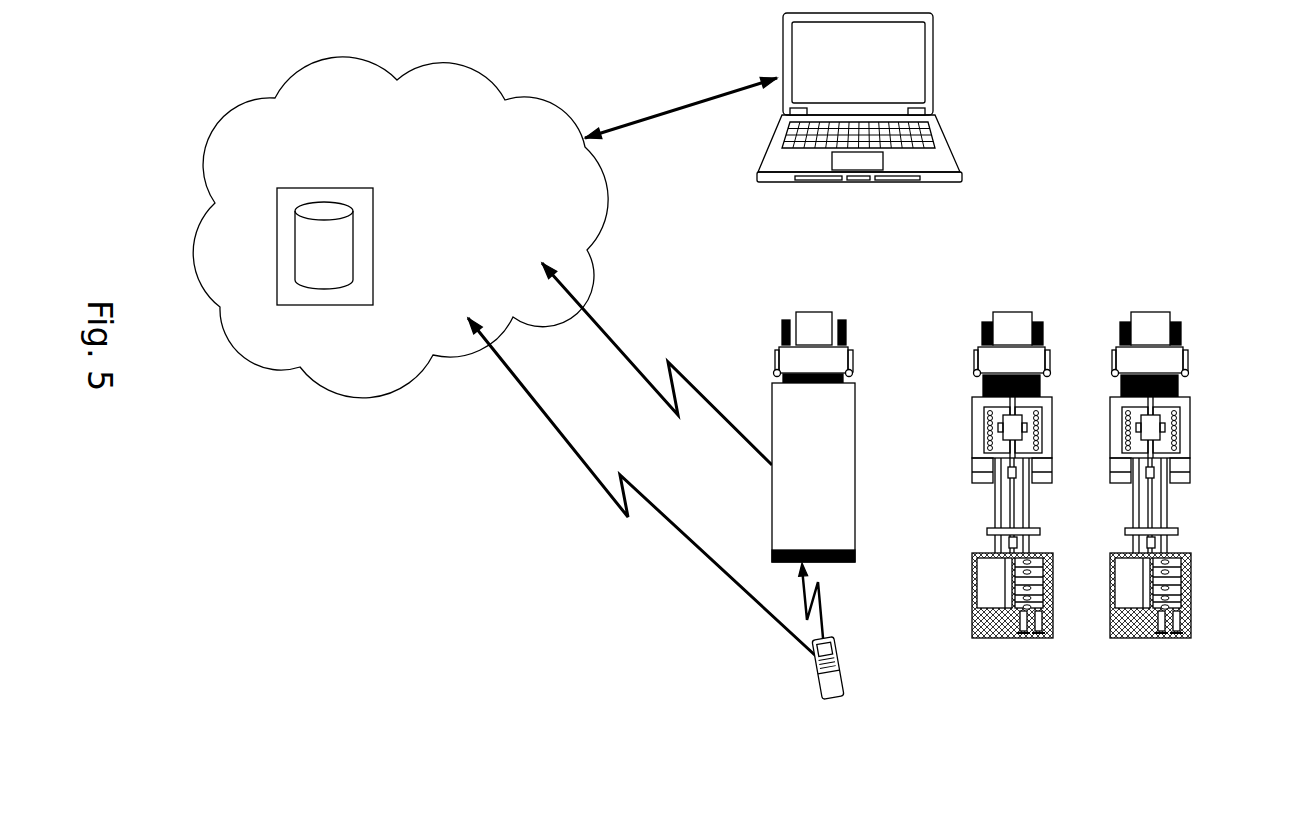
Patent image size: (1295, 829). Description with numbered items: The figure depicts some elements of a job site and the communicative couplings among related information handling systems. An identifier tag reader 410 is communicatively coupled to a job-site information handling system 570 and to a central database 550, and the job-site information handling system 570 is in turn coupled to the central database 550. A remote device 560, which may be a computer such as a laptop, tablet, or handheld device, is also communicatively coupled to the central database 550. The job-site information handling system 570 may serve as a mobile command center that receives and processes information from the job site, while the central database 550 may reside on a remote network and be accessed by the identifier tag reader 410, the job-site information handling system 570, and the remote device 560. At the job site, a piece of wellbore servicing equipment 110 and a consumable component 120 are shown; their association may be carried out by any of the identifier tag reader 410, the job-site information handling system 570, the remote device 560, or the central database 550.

The wellbore servicing equipment 110 is at (1124, 445).
The consumable component 120 is at (1193, 598).
The identifier tag reader 410 is at (837, 675).
The central database 550 is at (525, 118).
The remote device 560 is at (937, 100).
The job-site information handling system 570 is at (795, 522).